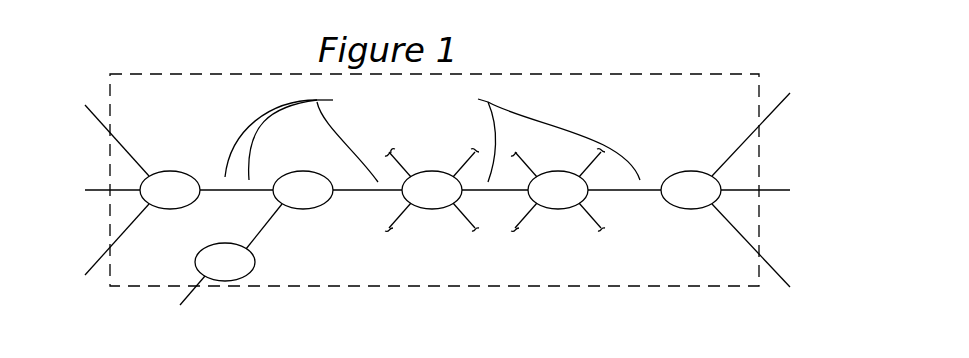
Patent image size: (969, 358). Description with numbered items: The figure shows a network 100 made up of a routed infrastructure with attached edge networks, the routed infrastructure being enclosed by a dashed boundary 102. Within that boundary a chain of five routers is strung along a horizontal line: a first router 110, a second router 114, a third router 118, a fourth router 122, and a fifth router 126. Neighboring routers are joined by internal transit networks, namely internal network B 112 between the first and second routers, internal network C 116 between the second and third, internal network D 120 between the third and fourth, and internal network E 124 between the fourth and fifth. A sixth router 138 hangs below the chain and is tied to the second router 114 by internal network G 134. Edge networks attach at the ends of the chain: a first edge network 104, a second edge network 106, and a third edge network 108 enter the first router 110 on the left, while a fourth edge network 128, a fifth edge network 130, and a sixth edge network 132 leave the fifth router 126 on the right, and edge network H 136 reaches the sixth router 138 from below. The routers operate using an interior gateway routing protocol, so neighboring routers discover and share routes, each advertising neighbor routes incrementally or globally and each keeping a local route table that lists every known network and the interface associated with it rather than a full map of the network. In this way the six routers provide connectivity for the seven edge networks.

The network 100 is at (111, 60).
The network domain 102 is at (250, 70).
The edge network A1 104 is at (97, 130).
The edge network A2 106 is at (98, 193).
The edge network A3 108 is at (97, 252).
The router R1 110 is at (182, 172).
The internal network B 112 is at (219, 194).
The router R2 114 is at (318, 148).
The internal network C 116 is at (352, 194).
The router R3 118 is at (447, 150).
The internal network D 120 is at (480, 194).
The router R4 122 is at (571, 150).
The internal network E 124 is at (613, 194).
The router R5 126 is at (705, 148).
The edge network F1 128 is at (768, 124).
The edge network F2 130 is at (773, 197).
The edge network F3 132 is at (768, 262).
The internal network G 134 is at (288, 228).
The edge network H 136 is at (172, 303).
The router R6 138 is at (253, 268).